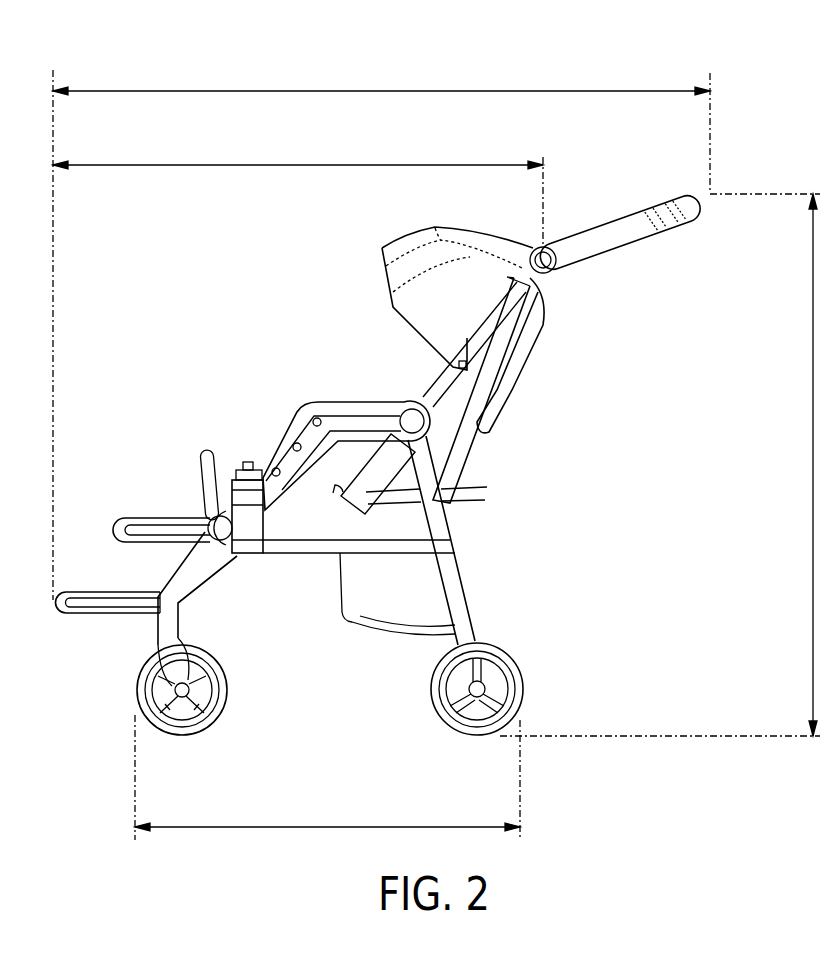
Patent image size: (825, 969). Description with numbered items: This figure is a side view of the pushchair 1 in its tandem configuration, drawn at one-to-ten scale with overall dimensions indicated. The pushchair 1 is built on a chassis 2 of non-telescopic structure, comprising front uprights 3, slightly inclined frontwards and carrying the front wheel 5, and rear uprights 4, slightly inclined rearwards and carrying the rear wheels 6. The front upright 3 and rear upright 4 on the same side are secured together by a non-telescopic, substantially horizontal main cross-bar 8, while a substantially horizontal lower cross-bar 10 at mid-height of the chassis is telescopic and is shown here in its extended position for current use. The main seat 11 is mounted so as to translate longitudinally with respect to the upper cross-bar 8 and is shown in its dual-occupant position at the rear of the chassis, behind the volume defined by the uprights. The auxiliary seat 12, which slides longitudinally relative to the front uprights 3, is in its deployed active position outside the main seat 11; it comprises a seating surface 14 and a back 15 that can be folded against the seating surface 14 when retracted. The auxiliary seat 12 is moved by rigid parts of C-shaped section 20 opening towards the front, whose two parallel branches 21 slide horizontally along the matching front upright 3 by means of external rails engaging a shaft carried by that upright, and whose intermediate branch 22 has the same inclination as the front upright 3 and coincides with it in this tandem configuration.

The tandem pushchair 1 is at (730, 130).
The chassis 2 is at (448, 528).
The front upright 3 is at (200, 577).
The rear upright 4 is at (462, 595).
The front wheel 5 is at (222, 695).
The rear wheel 6 is at (431, 693).
The main cross-bar 8 is at (358, 400).
The lower cross-bar 10 is at (375, 557).
The main seat 11 is at (492, 416).
The auxiliary seat 12 is at (173, 519).
The seating surface 14 is at (137, 517).
The back 15 is at (212, 450).
The C-shaped section part 20 is at (140, 592).
The parallel branch 21 is at (157, 518).
The intermediate branch 22 is at (210, 568).